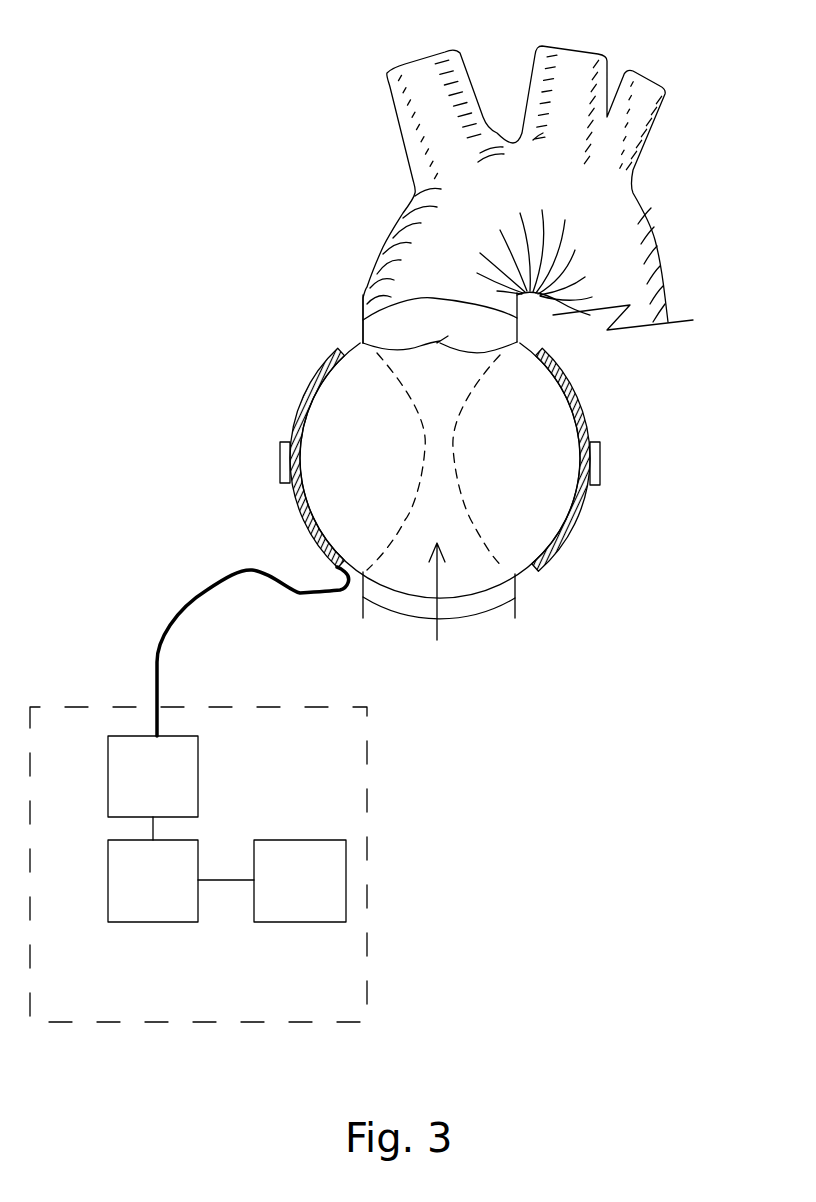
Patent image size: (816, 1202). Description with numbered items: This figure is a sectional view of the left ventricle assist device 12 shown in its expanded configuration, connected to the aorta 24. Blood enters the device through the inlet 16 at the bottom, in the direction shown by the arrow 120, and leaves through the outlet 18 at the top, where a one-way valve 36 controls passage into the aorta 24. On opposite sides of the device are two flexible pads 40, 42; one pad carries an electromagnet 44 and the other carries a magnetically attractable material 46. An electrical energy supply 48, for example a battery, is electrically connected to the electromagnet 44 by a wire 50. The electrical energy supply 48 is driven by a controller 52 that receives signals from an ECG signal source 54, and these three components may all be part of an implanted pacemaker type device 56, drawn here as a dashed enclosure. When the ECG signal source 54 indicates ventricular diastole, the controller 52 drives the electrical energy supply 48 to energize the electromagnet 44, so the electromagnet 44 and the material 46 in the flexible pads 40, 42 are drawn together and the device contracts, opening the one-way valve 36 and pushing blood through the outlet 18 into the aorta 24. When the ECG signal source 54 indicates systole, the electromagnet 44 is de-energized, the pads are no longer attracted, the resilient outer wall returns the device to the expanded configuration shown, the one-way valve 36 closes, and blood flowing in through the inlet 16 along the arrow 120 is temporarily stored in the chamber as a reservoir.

The left ventricle assist device 12 is at (247, 132).
The inlet 16 is at (515, 597).
The outlet 18 is at (518, 332).
The aorta 24 is at (598, 226).
The one-way valve 36 is at (390, 348).
The flexible pad 40 is at (305, 530).
The flexible pad 42 is at (581, 532).
The electromagnet 44 is at (280, 463).
The material 46 is at (600, 469).
The electrical energy supply 48 is at (108, 780).
The wire 50 is at (187, 593).
The controller 52 is at (155, 922).
The ECG signal source 54 is at (300, 922).
The implanted pacemaker type device 56 is at (367, 867).
The arrow 120 is at (437, 613).